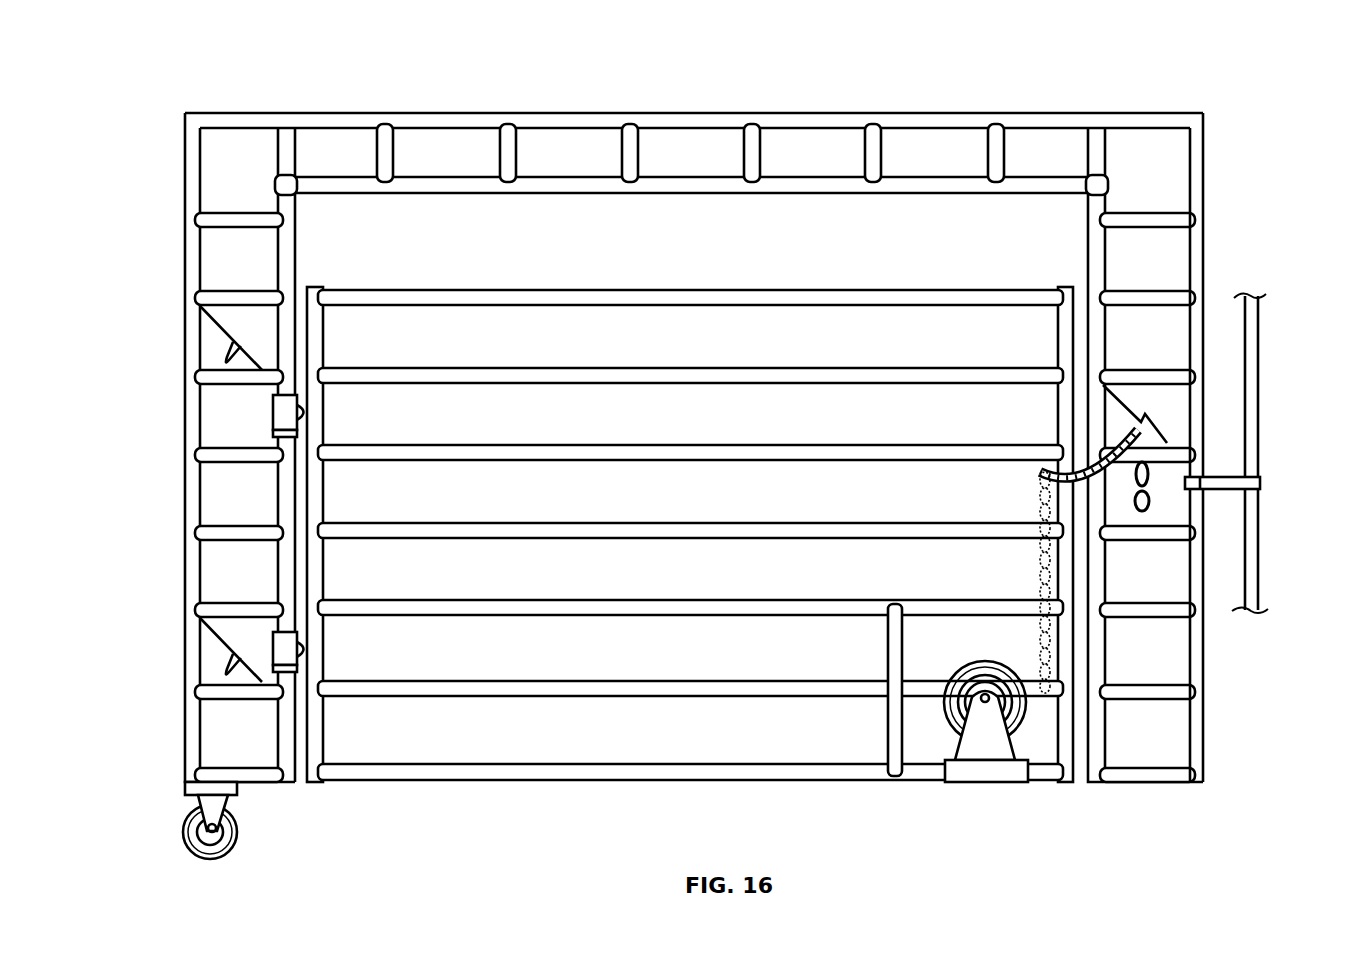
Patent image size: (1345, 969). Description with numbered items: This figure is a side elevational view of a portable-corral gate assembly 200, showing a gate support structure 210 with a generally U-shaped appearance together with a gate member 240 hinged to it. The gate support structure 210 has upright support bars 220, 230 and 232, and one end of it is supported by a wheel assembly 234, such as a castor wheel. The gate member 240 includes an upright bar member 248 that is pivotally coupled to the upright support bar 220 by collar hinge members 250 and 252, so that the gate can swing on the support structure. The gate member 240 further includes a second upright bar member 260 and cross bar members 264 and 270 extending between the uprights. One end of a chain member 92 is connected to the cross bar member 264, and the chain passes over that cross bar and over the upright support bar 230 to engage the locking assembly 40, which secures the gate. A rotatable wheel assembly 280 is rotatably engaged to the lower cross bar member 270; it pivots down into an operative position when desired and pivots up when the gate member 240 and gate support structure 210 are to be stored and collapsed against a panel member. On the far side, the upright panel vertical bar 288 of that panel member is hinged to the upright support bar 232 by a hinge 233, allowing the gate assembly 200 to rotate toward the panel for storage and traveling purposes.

The gate assembly 200 is at (245, 96).
The gate support structure 210 is at (462, 107).
The upright support bar 220 is at (288, 252).
The upright support bar 230 is at (1095, 250).
The upright support bar 232 is at (1197, 265).
The hinge 233 is at (1247, 485).
The wheel assembly 234 is at (247, 830).
The gate member 240 is at (690, 562).
The upright bar member 248 is at (315, 352).
The collar hinge member 250 is at (303, 412).
The collar hinge member 252 is at (303, 650).
The upright bar member 260 is at (1062, 348).
The cross bar member 264 is at (608, 452).
The cross bar member 270 is at (780, 781).
The rotatable wheel assembly 280 is at (938, 704).
The upright panel vertical bar 288 is at (1253, 336).
The locking assembly 40 is at (227, 320).
The chain member 92 is at (1041, 476).